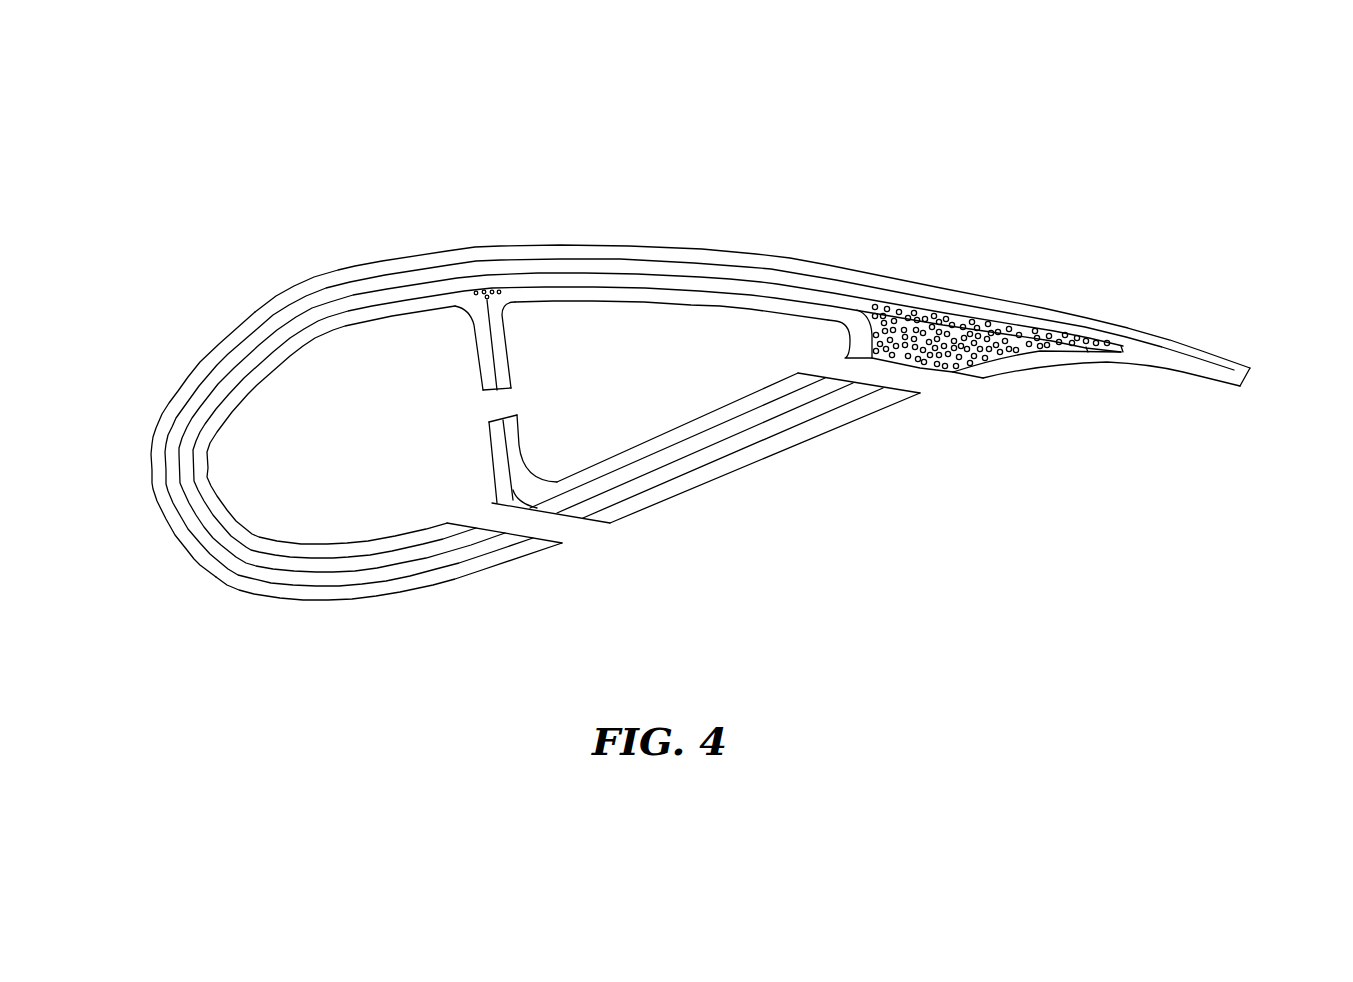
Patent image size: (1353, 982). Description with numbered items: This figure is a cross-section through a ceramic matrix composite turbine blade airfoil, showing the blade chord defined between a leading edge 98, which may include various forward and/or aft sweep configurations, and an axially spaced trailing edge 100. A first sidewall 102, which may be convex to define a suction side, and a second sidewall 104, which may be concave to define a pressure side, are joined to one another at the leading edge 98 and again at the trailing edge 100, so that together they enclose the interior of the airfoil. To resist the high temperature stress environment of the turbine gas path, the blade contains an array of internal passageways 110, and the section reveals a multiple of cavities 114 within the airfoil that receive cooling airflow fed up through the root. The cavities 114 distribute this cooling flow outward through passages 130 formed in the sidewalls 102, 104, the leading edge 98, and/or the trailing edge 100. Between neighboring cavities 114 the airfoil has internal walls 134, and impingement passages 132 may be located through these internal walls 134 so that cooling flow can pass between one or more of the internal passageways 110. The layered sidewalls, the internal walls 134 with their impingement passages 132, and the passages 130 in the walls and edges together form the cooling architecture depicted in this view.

The leading edge 98 is at (156, 497).
The trailing edge 100 is at (1247, 378).
The first sidewall 102 is at (528, 241).
The second sidewall 104 is at (528, 563).
The array of internal passageways 110 is at (672, 196).
The cavities 114 is at (407, 453).
The passages 130 is at (570, 532).
The impingement passages 132 is at (508, 400).
The internal walls 134 is at (497, 363).